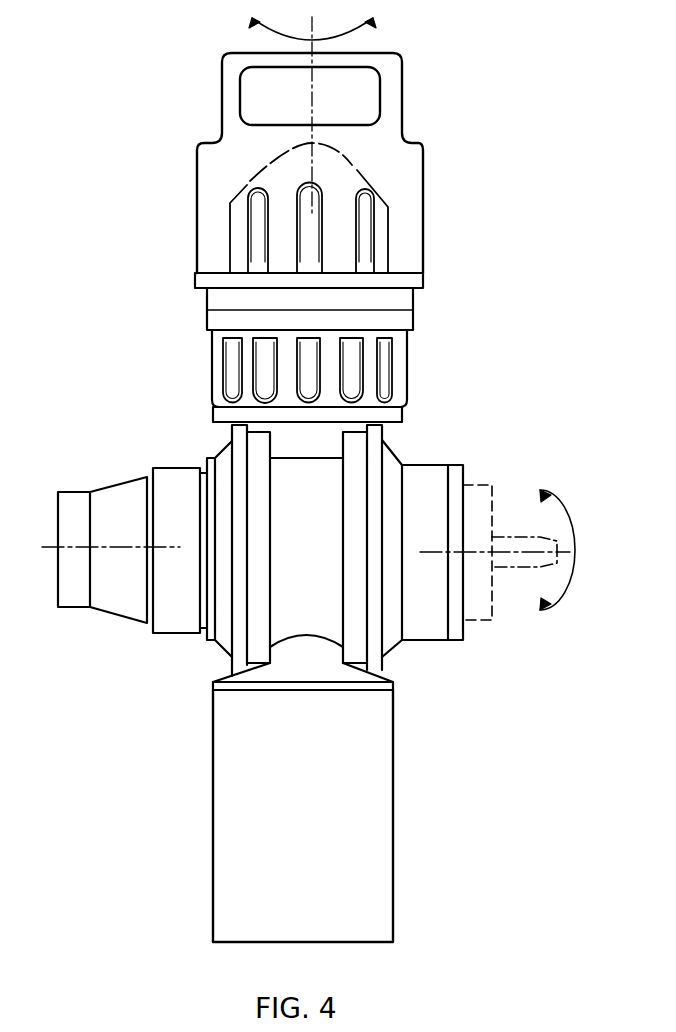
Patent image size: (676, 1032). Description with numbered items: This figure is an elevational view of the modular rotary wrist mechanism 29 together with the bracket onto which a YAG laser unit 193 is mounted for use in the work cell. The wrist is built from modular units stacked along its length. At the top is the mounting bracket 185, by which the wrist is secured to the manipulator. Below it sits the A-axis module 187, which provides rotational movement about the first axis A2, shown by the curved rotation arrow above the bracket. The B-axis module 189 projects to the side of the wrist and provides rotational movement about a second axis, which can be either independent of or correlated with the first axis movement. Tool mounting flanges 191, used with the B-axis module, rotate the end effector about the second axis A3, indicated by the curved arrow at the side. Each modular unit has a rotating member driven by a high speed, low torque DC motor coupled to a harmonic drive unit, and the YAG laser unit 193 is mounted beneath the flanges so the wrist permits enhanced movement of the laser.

The multiple axis rotary wrist mechanism 29 is at (324, 473).
The mounting bracket 185 is at (423, 178).
The A-axis module 187 is at (207, 323).
The B-axis module 189 is at (458, 477).
The tool mounting flanges 191 is at (393, 687).
The YAG laser unit 193 is at (383, 800).
The first axis A2 is at (378, 23).
The second axis A3 is at (575, 582).